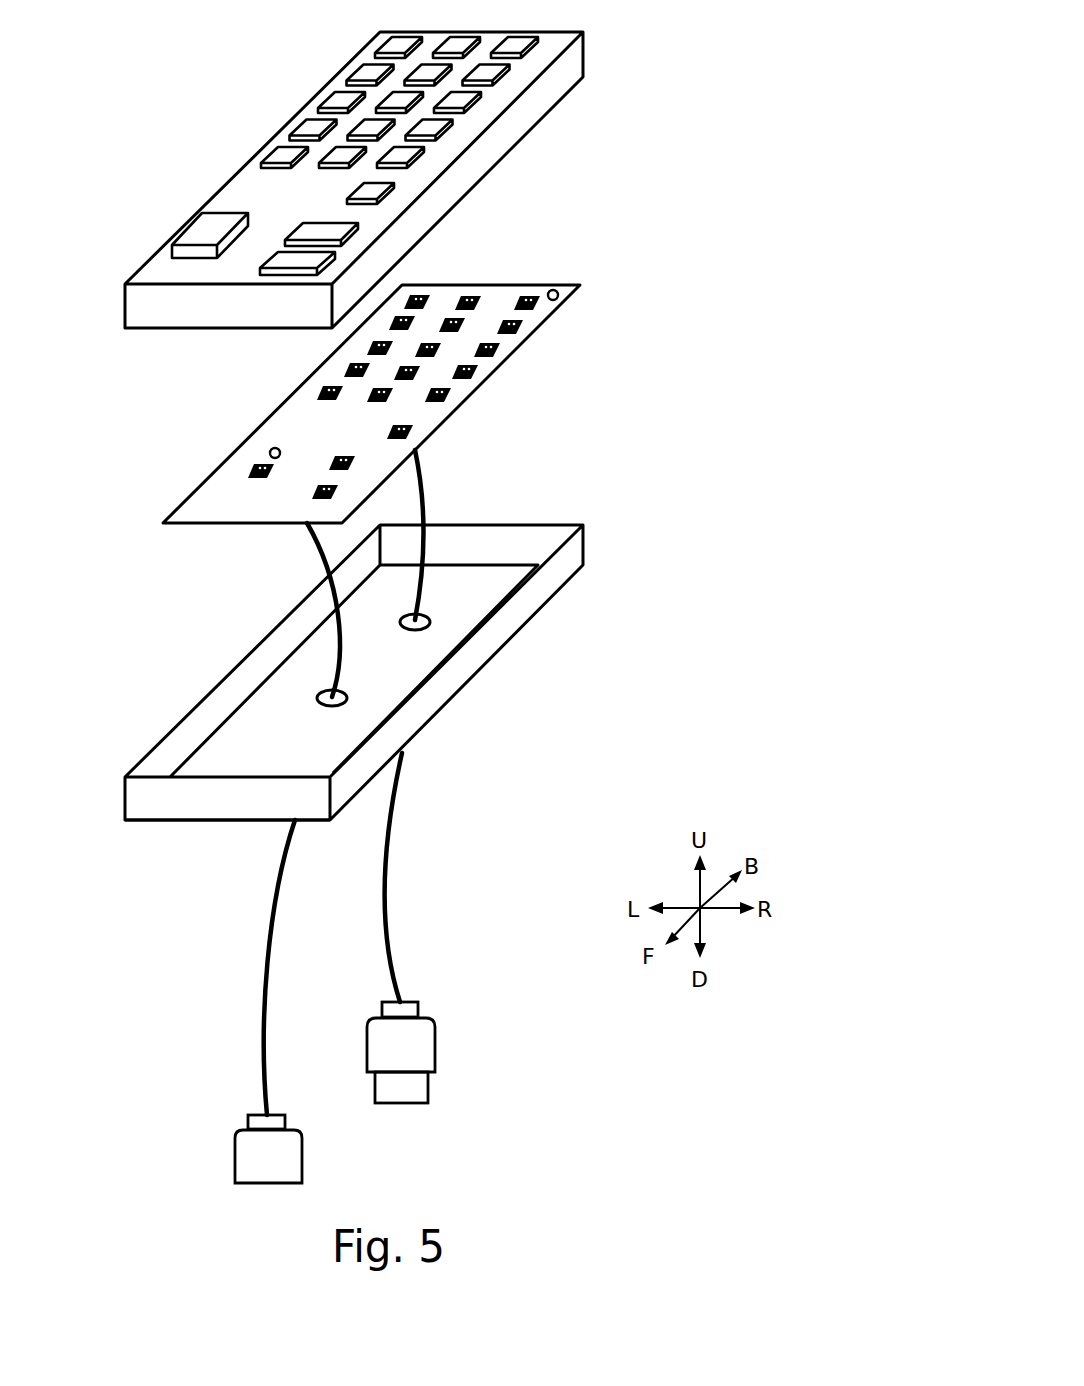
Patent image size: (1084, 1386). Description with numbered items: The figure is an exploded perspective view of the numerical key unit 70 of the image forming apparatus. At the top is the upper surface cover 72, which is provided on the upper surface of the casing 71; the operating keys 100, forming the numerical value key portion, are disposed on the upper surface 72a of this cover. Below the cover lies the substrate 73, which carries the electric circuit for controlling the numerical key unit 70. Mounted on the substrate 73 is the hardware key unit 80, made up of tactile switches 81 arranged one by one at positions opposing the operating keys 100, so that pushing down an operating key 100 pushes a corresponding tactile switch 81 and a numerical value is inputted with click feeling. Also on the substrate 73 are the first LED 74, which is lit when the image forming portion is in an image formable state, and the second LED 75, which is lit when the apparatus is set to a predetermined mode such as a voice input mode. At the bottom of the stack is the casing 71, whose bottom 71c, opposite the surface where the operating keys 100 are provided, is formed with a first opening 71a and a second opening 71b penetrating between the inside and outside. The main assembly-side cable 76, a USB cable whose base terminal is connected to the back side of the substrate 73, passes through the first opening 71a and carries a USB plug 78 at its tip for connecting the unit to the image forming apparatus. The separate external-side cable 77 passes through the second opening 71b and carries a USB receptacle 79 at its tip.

The numerical key unit 70 is at (703, 72).
The operating keys 100 is at (256, 108).
The upper surface cover 72 is at (538, 105).
The upper surface 72a is at (251, 193).
The substrate 73 is at (190, 512).
The first LED 74 is at (274, 447).
The second LED 75 is at (556, 289).
The hardware key unit 80 is at (552, 337).
The tactile switch 81 is at (447, 393).
The casing 71 is at (548, 585).
The first opening 71a is at (430, 622).
The second opening 71b is at (348, 700).
The bottom 71c is at (225, 835).
The main assembly-side cable 76 is at (390, 875).
The external-side cable 77 is at (260, 998).
The USB plug 78 is at (428, 1045).
The USB receptacle 79 is at (245, 1157).